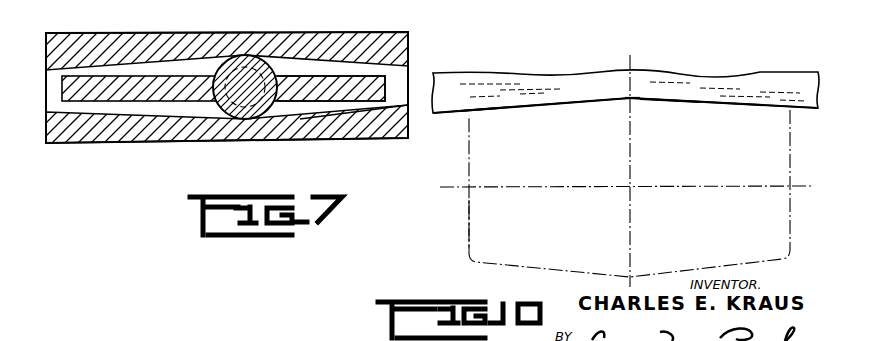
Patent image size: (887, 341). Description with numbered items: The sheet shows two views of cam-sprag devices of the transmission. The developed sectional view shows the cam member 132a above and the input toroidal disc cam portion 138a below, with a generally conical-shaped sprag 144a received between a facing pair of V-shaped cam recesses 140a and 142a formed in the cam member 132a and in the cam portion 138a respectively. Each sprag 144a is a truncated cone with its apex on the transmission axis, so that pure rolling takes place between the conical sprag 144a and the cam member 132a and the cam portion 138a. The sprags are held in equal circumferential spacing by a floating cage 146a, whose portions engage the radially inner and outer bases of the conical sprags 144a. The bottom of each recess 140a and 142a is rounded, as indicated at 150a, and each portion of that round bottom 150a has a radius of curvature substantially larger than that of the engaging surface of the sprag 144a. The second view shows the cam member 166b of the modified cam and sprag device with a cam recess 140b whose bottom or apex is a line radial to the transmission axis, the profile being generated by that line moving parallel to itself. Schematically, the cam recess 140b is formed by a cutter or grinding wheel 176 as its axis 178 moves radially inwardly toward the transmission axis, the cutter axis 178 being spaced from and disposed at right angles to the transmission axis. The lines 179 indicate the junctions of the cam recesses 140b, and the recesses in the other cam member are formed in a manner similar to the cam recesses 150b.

In FIG. 7, the cam member 132a is at (103, 42).
In FIG. 7, the floating cage 146a is at (151, 83).
In FIG. 7, the input toroidal disc cam portion 138a is at (108, 130).
In FIG. 7, the round bottom 150a is at (235, 56).
In FIG. 7, the conical sprag 144a is at (273, 67).
In FIG. 7, the V-shaped cam recess 140a is at (332, 68).
In FIG. 7, the V-shaped cam recess 142a is at (323, 108).
In FIG. 10, the cam member 166b is at (562, 80).
In FIG. 10, the cam recess 150b is at (605, 101).
In FIG. 10, the V-shaped cam recess 140b is at (655, 99).
In FIG. 10, the lines 179 is at (476, 116).
In FIG. 10, the cutter axis 178 is at (458, 190).
In FIG. 10, the grinding wheel 176 is at (470, 224).